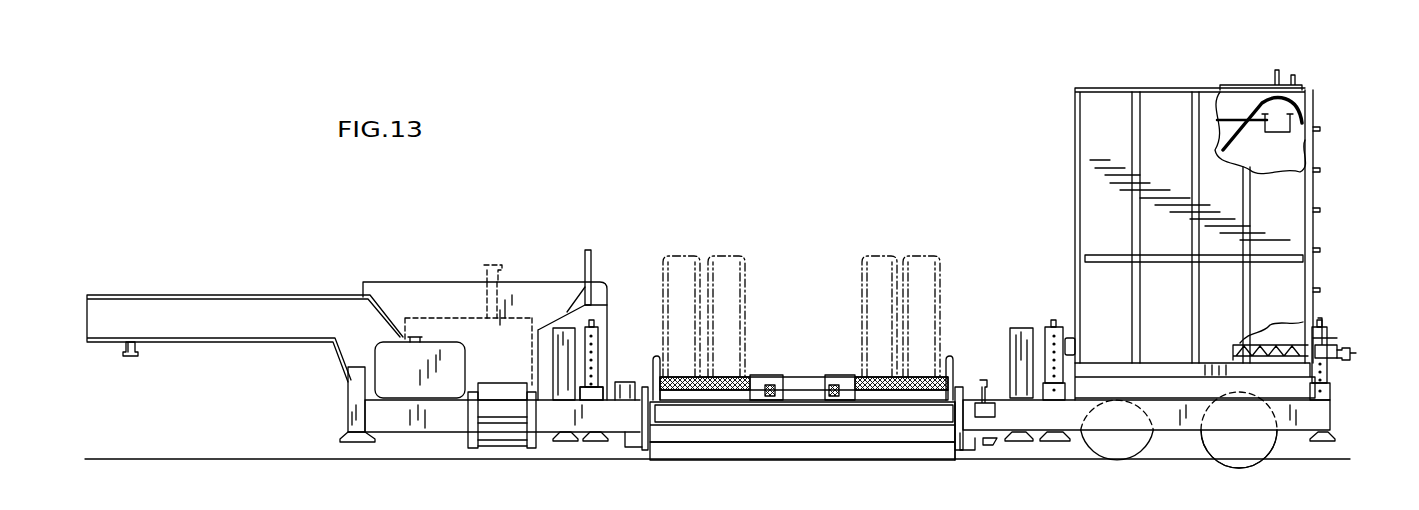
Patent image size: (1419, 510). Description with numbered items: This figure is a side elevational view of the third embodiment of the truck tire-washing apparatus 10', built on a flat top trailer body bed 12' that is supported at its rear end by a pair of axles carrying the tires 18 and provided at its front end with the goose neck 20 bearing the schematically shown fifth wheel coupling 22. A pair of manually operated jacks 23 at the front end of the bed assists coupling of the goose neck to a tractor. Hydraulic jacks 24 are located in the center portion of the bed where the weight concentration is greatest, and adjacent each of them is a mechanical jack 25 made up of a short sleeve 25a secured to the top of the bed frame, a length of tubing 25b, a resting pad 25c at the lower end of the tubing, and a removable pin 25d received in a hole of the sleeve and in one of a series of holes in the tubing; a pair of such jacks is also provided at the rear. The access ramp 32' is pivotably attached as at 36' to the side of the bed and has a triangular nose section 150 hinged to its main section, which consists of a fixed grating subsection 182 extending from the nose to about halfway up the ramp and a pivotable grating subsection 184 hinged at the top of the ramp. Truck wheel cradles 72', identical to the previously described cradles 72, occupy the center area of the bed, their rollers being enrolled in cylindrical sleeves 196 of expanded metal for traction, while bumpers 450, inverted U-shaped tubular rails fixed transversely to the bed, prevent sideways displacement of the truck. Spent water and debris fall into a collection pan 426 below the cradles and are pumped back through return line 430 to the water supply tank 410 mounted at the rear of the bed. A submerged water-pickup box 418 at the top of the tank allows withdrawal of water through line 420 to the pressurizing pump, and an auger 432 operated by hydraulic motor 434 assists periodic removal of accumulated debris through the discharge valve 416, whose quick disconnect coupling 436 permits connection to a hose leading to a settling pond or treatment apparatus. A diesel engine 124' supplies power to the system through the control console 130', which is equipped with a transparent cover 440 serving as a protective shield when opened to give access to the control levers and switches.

The truck tire-washing apparatus 10' is at (818, 164).
The goose neck 20 is at (232, 295).
The fifth wheel coupling 22 is at (135, 357).
The manually operated jacks 23 is at (347, 384).
The diesel engine 124' is at (485, 321).
The transparent cover 440 is at (542, 265).
The control console 130' is at (593, 324).
The hydraulic jacks 24 is at (560, 352).
The mechanical jack 25 is at (598, 335).
The collection pan 426 is at (637, 451).
The access ramp 32' is at (802, 437).
The pivotable subsection 184 is at (770, 420).
The nose section 150 is at (812, 447).
The fixed subsection 182 is at (894, 440).
The bumpers 450 is at (656, 358).
The cylindrical sleeves 196 is at (740, 379).
The pivot attachment 36' is at (802, 369).
The cradles 72 is at (721, 316).
The truck wheel cradles 72' is at (884, 316).
The short sleeve 25a is at (1048, 398).
The tubing 25b is at (1047, 358).
The resting pad 25c is at (1048, 443).
The removable pin 25d is at (1053, 393).
The flat top trailer body bed 12' is at (1179, 443).
The tires 18 is at (1263, 443).
The water supply tank 410 is at (1333, 196).
The water withdrawal line 420 is at (1227, 115).
The submerged water-pickup box 418 is at (1310, 141).
The return line 430 is at (1242, 133).
The hydraulic motor 434 is at (1073, 350).
The auger 432 is at (1273, 325).
The discharge valve 416 is at (1329, 350).
The quick disconnect coupling 436 is at (1352, 354).